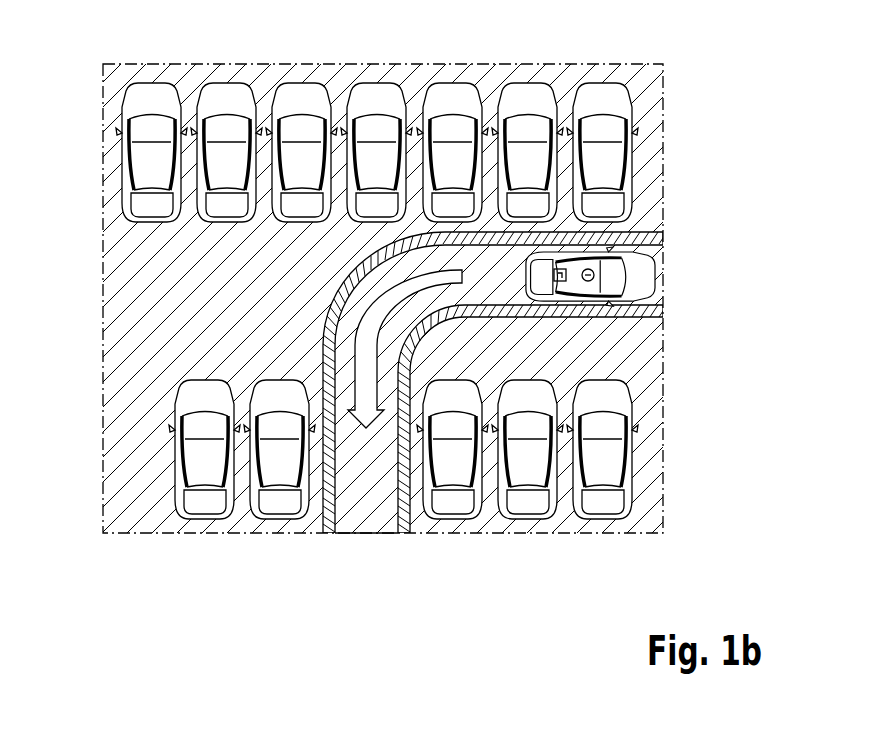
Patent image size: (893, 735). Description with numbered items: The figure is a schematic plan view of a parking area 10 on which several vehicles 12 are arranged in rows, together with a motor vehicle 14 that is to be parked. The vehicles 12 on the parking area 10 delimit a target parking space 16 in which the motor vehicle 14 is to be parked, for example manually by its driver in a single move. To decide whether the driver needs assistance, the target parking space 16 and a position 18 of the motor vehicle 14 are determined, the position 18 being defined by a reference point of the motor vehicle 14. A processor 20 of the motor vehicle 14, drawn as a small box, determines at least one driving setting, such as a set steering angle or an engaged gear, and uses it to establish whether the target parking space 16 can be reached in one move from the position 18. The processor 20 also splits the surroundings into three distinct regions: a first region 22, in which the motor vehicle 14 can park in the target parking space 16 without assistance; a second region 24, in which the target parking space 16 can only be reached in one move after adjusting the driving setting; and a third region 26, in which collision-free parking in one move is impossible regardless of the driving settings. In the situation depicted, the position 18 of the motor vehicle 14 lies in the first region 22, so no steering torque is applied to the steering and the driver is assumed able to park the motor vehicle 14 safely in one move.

The parking area 10 is at (673, 95).
The vehicles 12 is at (150, 90).
The motor vehicle 14 is at (645, 265).
The target parking space 16 is at (375, 540).
The position 18 is at (594, 276).
The processor 20 is at (562, 282).
The first region 22 is at (361, 530).
The second region 24 is at (330, 530).
The third region 26 is at (108, 265).